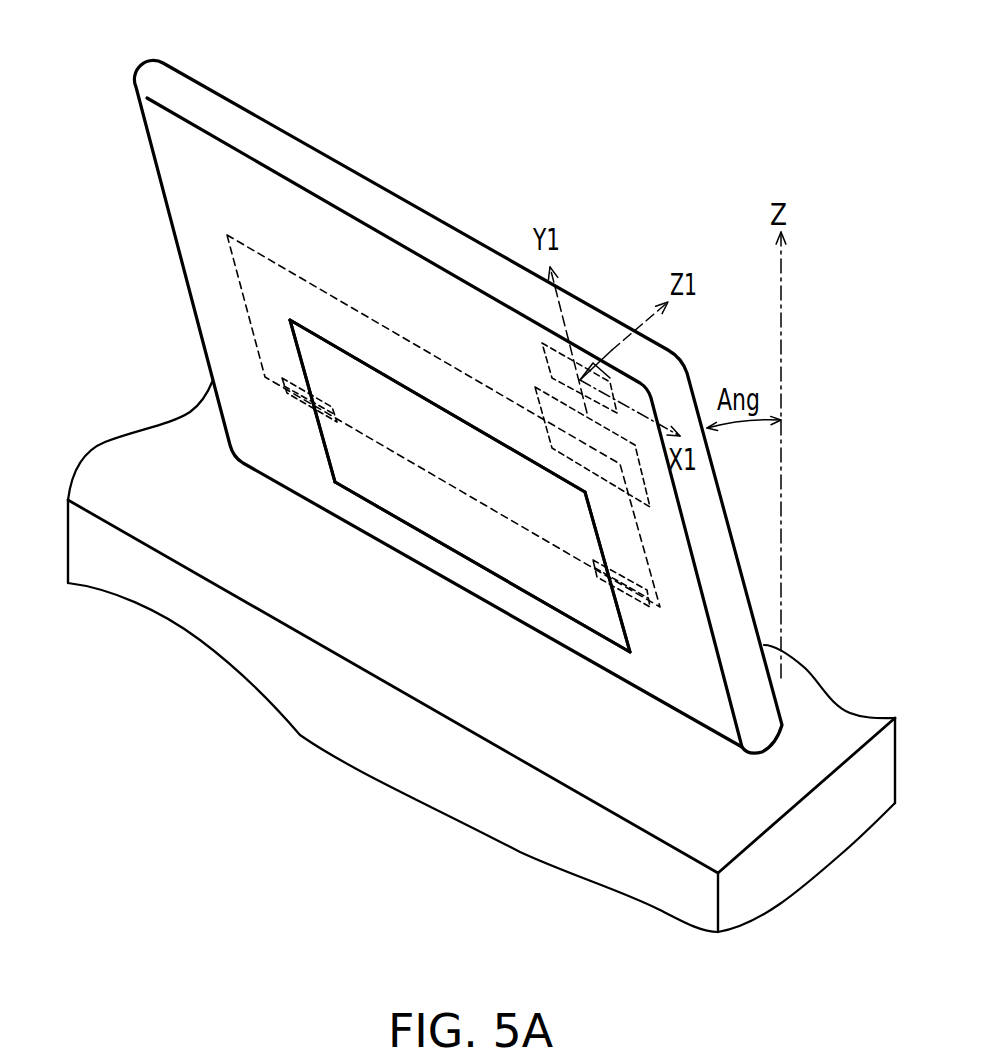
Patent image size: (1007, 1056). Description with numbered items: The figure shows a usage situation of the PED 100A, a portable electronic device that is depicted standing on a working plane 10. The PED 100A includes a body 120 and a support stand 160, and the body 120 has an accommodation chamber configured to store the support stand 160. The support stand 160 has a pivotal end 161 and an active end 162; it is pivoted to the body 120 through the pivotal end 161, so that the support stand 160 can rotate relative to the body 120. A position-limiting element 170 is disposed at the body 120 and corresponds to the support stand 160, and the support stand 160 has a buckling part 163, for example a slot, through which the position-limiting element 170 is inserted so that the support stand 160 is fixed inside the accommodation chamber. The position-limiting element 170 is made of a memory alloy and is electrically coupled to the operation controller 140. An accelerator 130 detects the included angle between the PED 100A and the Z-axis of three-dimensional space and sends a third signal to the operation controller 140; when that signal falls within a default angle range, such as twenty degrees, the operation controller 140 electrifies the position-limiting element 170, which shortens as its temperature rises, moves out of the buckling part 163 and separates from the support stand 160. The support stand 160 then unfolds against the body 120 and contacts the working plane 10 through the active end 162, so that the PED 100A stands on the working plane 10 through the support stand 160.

The PED 100A is at (98, 98).
The working plane 10 is at (108, 477).
The body 120 is at (340, 228).
The accelerator 130 is at (540, 345).
The operation controller 140 is at (645, 477).
The support stand 160 is at (420, 473).
The pivotal end 161 is at (418, 400).
The active end 162 is at (473, 557).
The buckling part 163 is at (313, 400).
The position-limiting element 170 is at (292, 403).